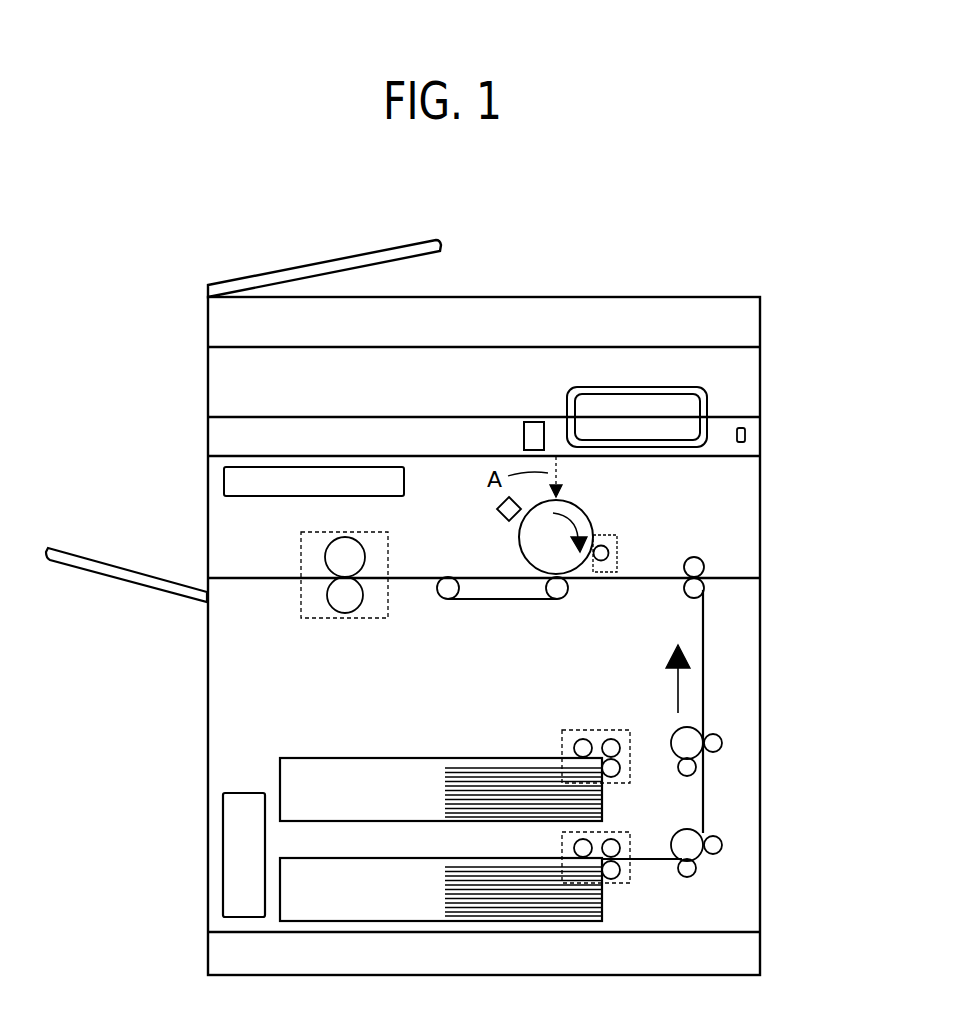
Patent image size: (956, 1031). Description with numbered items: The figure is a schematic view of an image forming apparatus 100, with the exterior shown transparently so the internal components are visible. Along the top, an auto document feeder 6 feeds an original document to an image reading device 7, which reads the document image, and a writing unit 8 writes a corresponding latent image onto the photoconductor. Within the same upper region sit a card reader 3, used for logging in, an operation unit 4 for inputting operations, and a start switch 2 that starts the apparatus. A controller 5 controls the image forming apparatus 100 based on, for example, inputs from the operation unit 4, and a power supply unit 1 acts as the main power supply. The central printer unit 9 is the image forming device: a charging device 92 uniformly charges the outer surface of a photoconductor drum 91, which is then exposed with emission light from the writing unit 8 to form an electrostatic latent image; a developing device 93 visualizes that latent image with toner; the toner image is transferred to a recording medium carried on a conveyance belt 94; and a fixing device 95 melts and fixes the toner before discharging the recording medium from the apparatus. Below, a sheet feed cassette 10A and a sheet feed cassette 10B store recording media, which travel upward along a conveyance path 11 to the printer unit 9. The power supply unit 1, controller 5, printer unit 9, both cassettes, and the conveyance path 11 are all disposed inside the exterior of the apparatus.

The image forming apparatus 100 is at (751, 251).
The power supply unit 1 is at (223, 853).
The start switch 2 is at (747, 430).
The card reader 3 is at (539, 420).
The operation unit 4 is at (701, 388).
The controller 5 is at (224, 485).
The auto document feeder 6 is at (203, 232).
The image reading device 7 is at (203, 345).
The writing unit 8 is at (203, 417).
The printer unit 9 is at (823, 425).
The photoconductor drum 91 is at (593, 522).
The charging device 92 is at (519, 501).
The developing device 93 is at (618, 547).
The conveyance belt 94 is at (526, 600).
The fixing device 95 is at (353, 620).
The sheet feed cassette 10A is at (606, 813).
The sheet feed cassette 10B is at (606, 918).
The conveyance path 11 is at (703, 688).